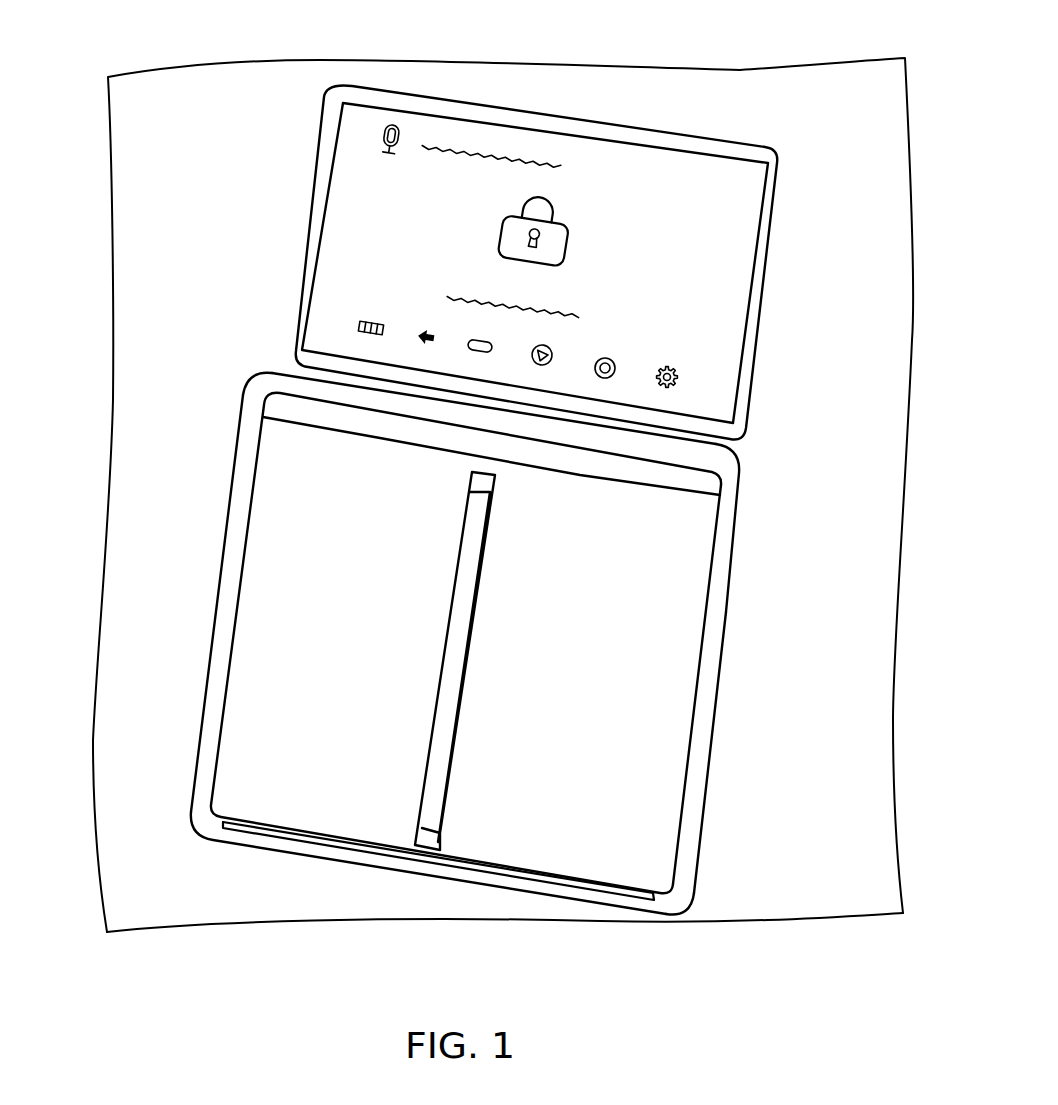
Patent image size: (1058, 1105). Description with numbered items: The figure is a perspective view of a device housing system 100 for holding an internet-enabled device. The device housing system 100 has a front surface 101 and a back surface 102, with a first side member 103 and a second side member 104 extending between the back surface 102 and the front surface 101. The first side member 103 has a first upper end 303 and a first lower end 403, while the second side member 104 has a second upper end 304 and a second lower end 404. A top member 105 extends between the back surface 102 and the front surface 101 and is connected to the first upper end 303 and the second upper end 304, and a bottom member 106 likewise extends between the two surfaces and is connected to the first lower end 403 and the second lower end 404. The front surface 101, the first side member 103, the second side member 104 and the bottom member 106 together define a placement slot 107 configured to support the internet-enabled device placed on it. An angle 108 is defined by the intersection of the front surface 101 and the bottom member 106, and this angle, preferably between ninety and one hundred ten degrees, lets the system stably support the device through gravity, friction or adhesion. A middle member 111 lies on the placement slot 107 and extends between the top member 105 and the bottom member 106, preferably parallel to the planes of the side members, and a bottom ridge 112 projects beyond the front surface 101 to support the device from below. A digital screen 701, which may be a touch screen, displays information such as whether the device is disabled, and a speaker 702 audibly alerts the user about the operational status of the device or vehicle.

The device housing system 100 is at (156, 345).
The front surface 101 is at (323, 462).
The back surface 102 is at (274, 372).
The first side member 103 is at (228, 613).
The second side member 104 is at (712, 655).
The top member 105 is at (545, 447).
The bottom member 106 is at (250, 848).
The placement slot 107 is at (263, 697).
The angle 108 is at (237, 797).
The middle member 111 is at (487, 520).
The bottom ridge 112 is at (653, 907).
The first upper end 303 is at (243, 417).
The second upper end 304 is at (733, 505).
The first lower end 403 is at (207, 773).
The second lower end 404 is at (688, 834).
The digital screen 701 is at (722, 245).
The speaker 702 is at (758, 315).